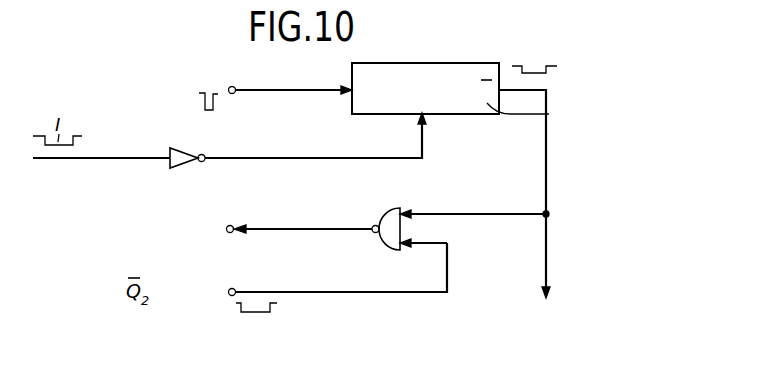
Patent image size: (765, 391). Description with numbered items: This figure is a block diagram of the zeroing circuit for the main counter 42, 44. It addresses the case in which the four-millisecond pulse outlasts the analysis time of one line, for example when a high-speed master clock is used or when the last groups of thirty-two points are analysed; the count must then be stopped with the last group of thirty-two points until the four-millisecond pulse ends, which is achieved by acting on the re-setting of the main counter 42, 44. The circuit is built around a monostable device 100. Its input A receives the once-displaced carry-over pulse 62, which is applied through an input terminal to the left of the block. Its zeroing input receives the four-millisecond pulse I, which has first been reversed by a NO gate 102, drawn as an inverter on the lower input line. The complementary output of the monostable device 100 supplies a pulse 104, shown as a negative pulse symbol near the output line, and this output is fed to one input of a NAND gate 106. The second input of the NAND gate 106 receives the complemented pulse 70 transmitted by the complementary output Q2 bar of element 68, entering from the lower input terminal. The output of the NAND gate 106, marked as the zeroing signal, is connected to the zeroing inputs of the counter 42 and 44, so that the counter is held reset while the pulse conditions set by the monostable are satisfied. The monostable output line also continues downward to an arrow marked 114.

The monostable device 100 is at (513, 94).
The NO gate 102 is at (188, 150).
The pulse 104 is at (535, 71).
The NAND gate 106 is at (387, 212).
The output of monostable 114 is at (541, 290).
The pulse 62 is at (200, 101).
The circuit element with output Q2 bar 68 is at (225, 291).
The pulse 70 is at (269, 312).
The main counter 42 is at (281, 213).
The main counter 44 is at (231, 225).